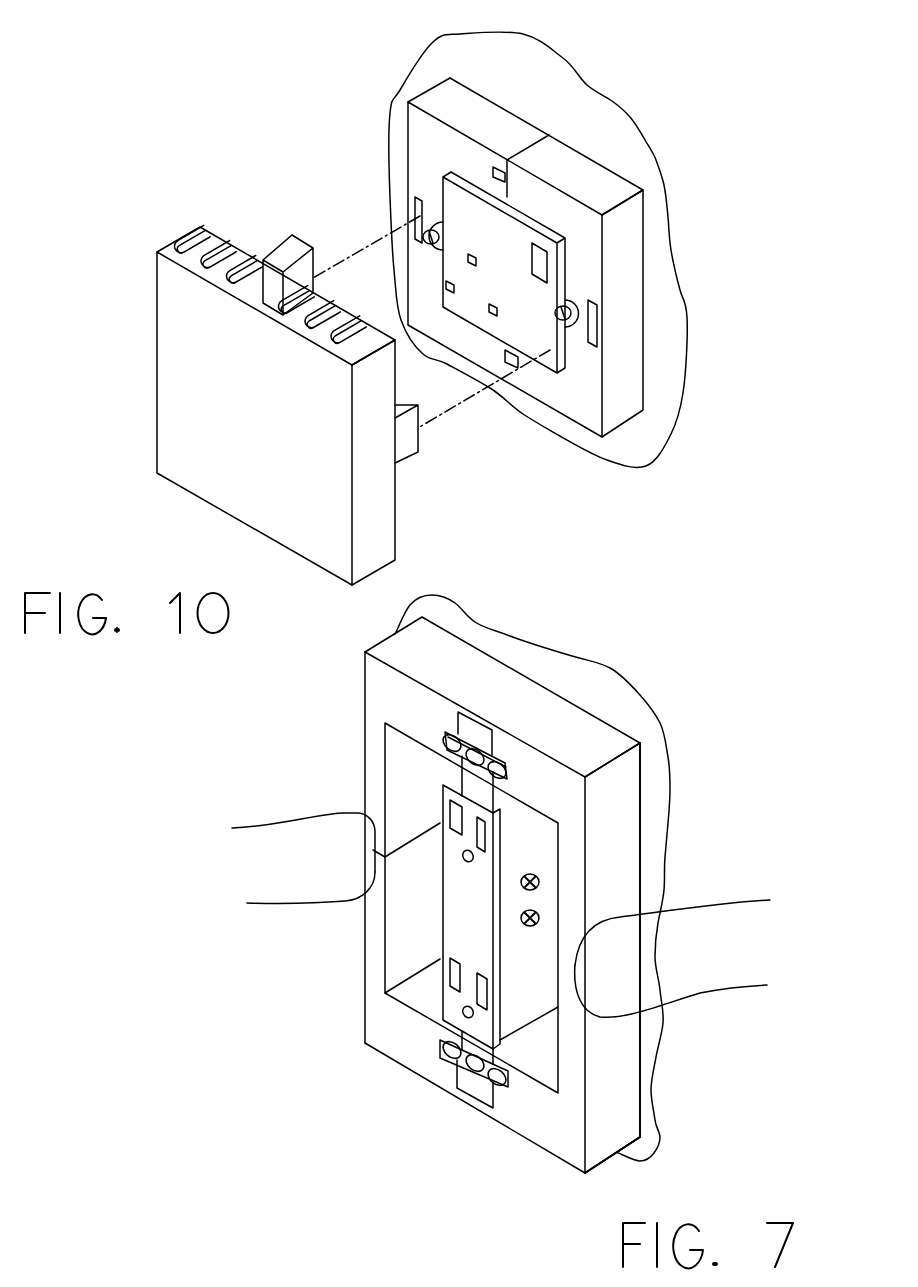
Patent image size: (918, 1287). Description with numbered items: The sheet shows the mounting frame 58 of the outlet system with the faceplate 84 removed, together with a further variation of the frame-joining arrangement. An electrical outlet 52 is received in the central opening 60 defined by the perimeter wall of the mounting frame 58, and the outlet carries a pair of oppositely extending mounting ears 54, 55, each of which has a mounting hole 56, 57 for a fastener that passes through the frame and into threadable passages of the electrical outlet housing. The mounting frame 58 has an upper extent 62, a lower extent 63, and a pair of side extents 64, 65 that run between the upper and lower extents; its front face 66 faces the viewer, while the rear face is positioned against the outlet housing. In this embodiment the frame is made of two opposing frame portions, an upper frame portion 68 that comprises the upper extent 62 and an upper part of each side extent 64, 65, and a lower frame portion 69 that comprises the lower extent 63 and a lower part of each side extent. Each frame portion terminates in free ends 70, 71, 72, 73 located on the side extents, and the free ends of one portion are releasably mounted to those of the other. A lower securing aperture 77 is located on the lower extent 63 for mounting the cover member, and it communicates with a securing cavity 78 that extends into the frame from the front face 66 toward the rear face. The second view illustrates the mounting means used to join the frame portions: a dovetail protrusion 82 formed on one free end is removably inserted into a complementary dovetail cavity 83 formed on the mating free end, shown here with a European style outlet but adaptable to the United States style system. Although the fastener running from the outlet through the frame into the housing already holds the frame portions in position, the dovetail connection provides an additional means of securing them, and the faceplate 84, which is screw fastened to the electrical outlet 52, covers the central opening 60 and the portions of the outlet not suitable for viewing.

In FIG. 7, the electrical outlet 52 is at (452, 927).
In FIG. 7, the mounting ear 54 is at (467, 772).
In FIG. 7, the mounting ear 55 is at (440, 1040).
In FIG. 7, the mounting hole 56 is at (482, 762).
In FIG. 7, the mounting hole 57 is at (457, 1070).
In FIG. 7, the mounting frame 58 is at (625, 798).
In FIG. 7, the central opening 60 is at (534, 1050).
In FIG. 7, the upper extent 62 is at (473, 670).
In FIG. 7, the lower extent 63 is at (387, 1047).
In FIG. 7, the side extent 64 is at (370, 795).
In FIG. 7, the side extent 65 is at (627, 897).
In FIG. 7, the front face 66 is at (385, 680).
In FIG. 7, the upper frame portion 68 is at (630, 847).
In FIG. 7, the lower frame portion 69 is at (623, 1065).
In FIG. 7, the free end 70 is at (281, 841).
In FIG. 7, the free end 71 is at (289, 896).
In FIG. 7, the free end 72 is at (694, 923).
In FIG. 7, the free end 73 is at (694, 991).
In FIG. 7, the lower securing aperture 77 is at (494, 722).
In FIG. 7, the securing cavity 78 is at (480, 1107).
In FIG. 10, the dovetail protrusion 82 is at (597, 200).
In FIG. 10, the dovetail cavity 83 is at (408, 130).
In FIG. 10, the faceplate 84 is at (587, 280).